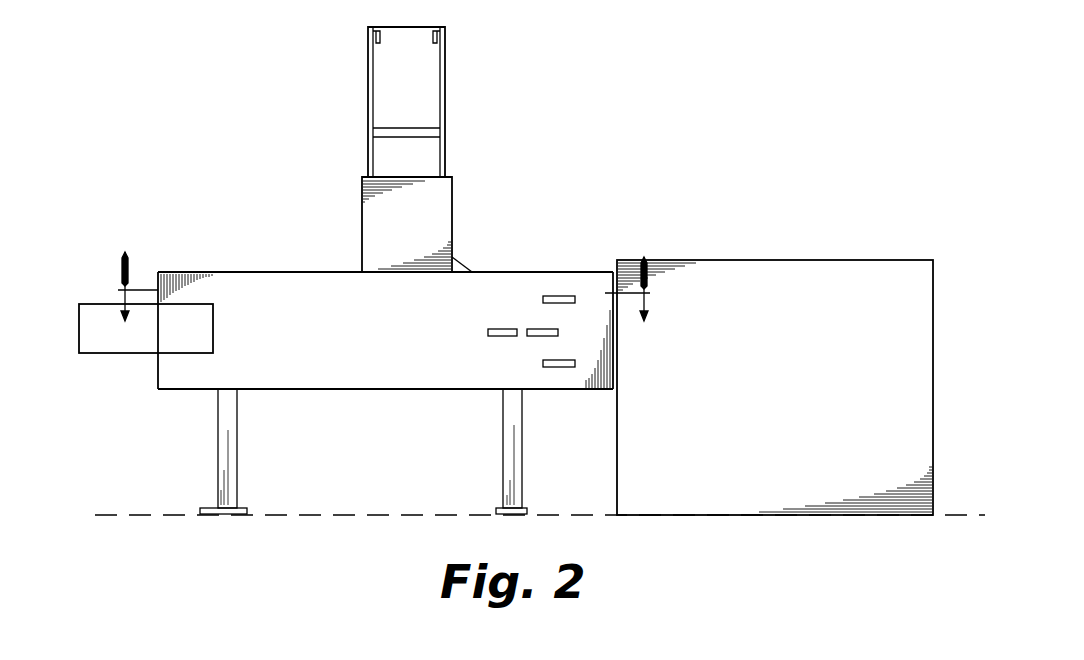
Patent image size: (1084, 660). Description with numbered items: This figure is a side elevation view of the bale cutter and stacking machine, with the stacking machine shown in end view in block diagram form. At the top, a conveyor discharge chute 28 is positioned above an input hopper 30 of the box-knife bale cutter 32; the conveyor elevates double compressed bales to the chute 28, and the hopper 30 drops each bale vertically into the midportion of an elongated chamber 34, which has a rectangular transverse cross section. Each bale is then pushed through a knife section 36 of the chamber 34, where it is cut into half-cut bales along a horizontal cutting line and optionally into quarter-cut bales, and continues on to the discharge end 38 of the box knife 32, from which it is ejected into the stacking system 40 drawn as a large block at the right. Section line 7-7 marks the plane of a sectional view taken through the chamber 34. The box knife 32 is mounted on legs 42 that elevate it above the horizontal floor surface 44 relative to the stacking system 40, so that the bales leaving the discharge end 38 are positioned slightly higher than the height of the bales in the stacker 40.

The section line 7- 7 is at (365, 302).
The conveyor discharge chute 28 is at (445, 133).
The input hopper 30 is at (452, 215).
The box-knife bale cutter 32 is at (262, 224).
The elongated chamber 34 is at (372, 390).
The knife section 36 is at (540, 271).
The discharge end 38 is at (576, 390).
The stacking system 40 is at (879, 254).
The legs 42 is at (220, 441).
The horizontal floor surface 44 is at (138, 514).